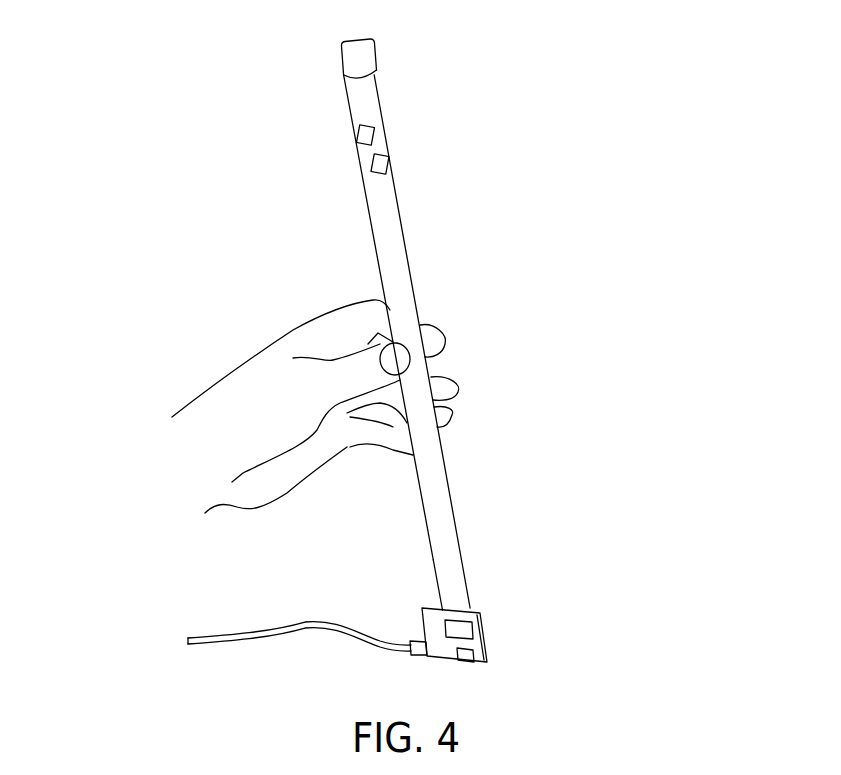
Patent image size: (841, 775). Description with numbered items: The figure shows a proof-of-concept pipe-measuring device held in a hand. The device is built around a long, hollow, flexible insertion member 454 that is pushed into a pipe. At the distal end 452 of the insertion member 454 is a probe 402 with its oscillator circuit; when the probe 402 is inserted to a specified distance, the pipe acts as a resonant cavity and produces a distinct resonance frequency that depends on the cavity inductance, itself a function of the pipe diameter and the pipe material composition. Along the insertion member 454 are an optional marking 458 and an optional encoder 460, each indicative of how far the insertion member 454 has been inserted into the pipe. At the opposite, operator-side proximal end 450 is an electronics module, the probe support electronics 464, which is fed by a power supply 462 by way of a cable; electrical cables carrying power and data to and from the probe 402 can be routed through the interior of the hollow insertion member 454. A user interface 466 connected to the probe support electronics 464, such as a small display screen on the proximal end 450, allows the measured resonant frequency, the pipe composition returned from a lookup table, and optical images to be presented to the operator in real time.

The probe 402 is at (380, 313).
The distal end 452 is at (325, 93).
The insertion member 454 is at (418, 300).
The proximal end 450 is at (475, 562).
The marking 458 is at (357, 145).
The encoder 460 is at (388, 153).
The probe support electronics 464 is at (449, 677).
The user interface 466 is at (323, 683).
The power supply 462 is at (267, 625).